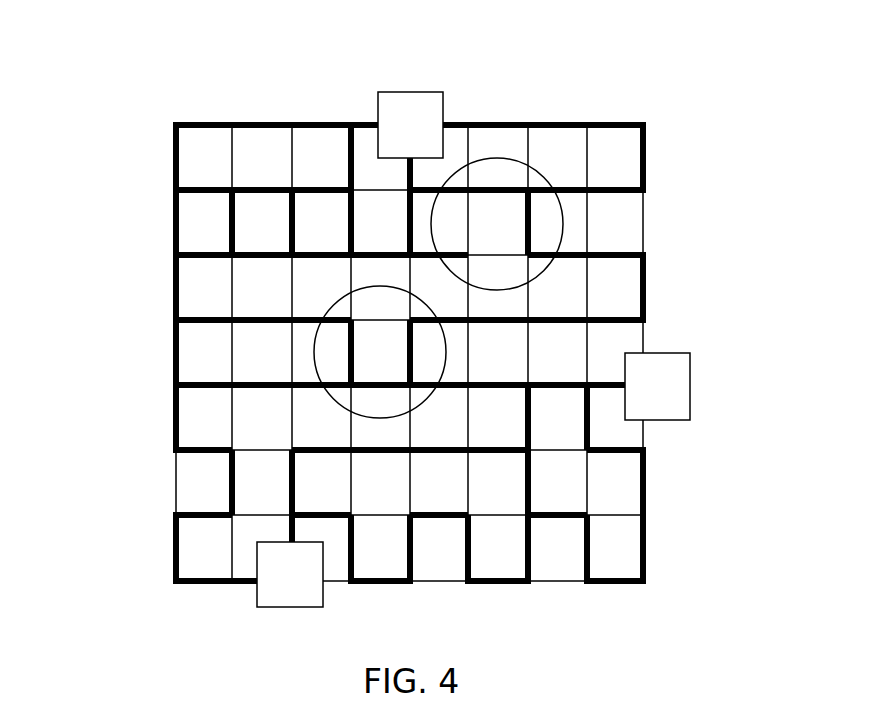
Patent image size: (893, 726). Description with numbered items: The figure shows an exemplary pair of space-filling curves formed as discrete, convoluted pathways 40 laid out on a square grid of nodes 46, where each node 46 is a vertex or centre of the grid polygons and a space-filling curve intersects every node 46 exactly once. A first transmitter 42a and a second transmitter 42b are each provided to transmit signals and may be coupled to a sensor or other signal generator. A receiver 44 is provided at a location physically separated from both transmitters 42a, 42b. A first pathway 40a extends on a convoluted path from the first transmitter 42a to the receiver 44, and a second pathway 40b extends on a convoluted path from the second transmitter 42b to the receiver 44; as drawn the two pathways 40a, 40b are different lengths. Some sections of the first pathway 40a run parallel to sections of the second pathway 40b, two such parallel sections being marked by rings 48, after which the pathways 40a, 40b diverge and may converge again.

The convoluted pathway 40 is at (166, 157).
The first pathway 40a is at (651, 489).
The second pathway 40b is at (166, 548).
The first transmitter 42a is at (692, 390).
The second transmitter 42b is at (288, 608).
The receiver 44 is at (416, 91).
The node 46 is at (407, 201).
The ring 48 is at (498, 158).